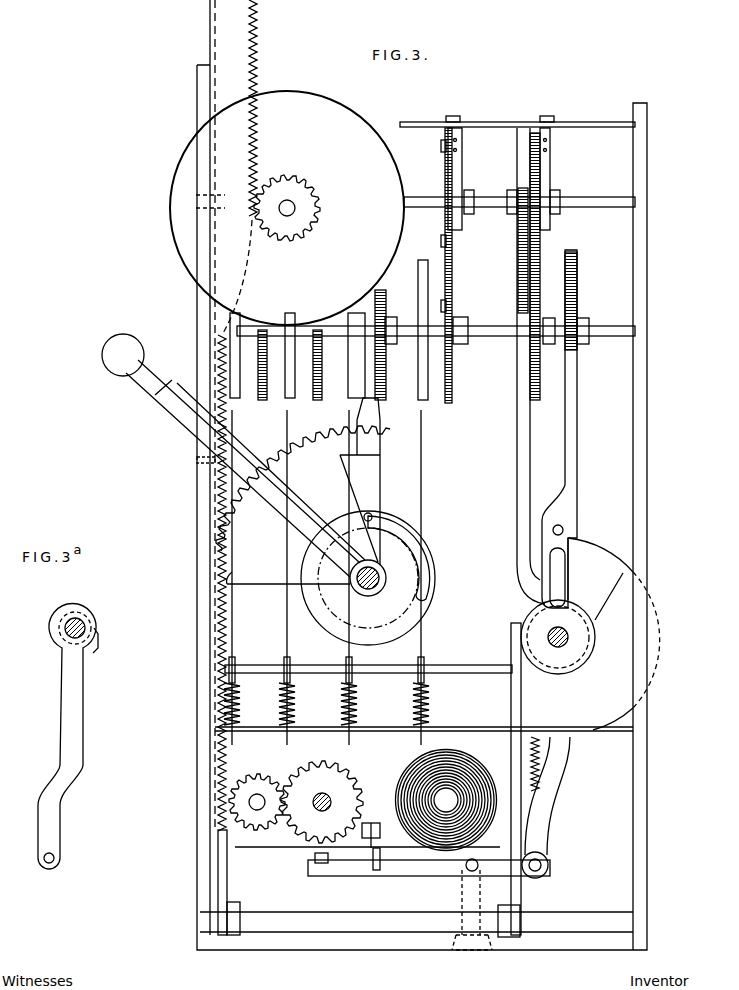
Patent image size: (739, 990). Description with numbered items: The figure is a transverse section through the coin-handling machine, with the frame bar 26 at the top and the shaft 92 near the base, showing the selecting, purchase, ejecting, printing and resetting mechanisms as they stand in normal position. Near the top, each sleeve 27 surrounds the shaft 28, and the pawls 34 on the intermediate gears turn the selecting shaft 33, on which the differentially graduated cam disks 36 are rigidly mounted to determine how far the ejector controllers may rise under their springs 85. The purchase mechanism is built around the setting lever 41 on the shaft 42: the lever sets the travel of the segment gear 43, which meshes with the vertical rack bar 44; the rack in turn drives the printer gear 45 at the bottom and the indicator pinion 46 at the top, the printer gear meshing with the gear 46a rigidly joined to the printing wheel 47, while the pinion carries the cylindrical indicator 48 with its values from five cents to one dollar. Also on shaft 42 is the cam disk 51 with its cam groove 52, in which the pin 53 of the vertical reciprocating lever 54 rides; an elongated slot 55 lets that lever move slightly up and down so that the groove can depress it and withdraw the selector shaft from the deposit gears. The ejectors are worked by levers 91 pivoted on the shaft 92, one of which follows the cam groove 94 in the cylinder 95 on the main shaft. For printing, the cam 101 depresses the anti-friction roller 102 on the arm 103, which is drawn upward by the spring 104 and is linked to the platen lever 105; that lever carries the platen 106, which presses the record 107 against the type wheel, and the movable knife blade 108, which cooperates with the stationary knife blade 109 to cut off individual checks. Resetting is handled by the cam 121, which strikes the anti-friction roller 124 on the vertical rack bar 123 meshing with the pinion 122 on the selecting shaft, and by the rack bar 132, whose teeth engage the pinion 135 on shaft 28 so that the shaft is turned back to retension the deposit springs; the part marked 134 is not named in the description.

In FIG. 3, the frame bar 26 is at (582, 125).
In FIG. 3, the sleeve 27 is at (557, 199).
In FIG. 3, the shaft 28 is at (594, 198).
In FIG. 3, the selecting shaft 33 is at (478, 326).
In FIG. 3, the pawl 34 is at (287, 432).
In FIG. 3, the cam disk 36 is at (237, 400).
In FIG. 3, the setting lever 41 is at (172, 422).
In FIG. 3A, the setting lever 41 is at (80, 622).
In FIG. 3, the shaft 42 is at (374, 596).
In FIG. 3, the segment gear 43 is at (378, 444).
In FIG. 3, the vertical rack bar 44 is at (222, 28).
In FIG. 3, the printer gear 45 is at (238, 800).
In FIG. 3, the indicator pinion 46 is at (313, 196).
In FIG. 3, the gear 46a is at (340, 786).
In FIG. 3, the printing wheel 47 is at (358, 798).
In FIG. 3, the cylindrical indicator 48 is at (323, 104).
In FIG. 3, the cam disk 51 is at (432, 580).
In FIG. 3, the cam groove 52 is at (386, 526).
In FIG. 3, the pin 53 is at (371, 513).
In FIG. 3, the vertical reciprocating lever 54 is at (382, 476).
In FIG. 3, the elongated slot 55 is at (385, 558).
In FIG. 3, the spring 85 is at (288, 706).
In FIG. 3, the lever 91 is at (511, 636).
In FIG. 3, the shaft 92 is at (555, 912).
In FIG. 3, the cam groove 94 is at (570, 640).
In FIG. 3, the cylinder 95 is at (560, 670).
In FIG. 3A, the cam 101 is at (98, 640).
In FIG. 3A, the anti-friction roller 102 is at (82, 655).
In FIG. 3, the arm 103 is at (564, 778).
In FIG. 3A, the arm 103 is at (84, 720).
In FIG. 3, the spring 104 is at (582, 748).
In FIG. 3, the platen lever 105 is at (421, 877).
In FIG. 3, the platen 106 is at (314, 858).
In FIG. 3, the record 107 is at (262, 849).
In FIG. 3, the movable knife blade 108 is at (382, 834).
In FIG. 3, the stationary knife blade 109 is at (377, 870).
In FIG. 3, the cam 121 is at (598, 556).
In FIG. 3, the pinion 122 is at (581, 344).
In FIG. 3, the vertical rack bar 123 is at (579, 280).
In FIG. 3, the anti-friction roller 124 is at (563, 528).
In FIG. 3, the rack bar 132 is at (517, 472).
In FIG. 3, the cam disc 134 is at (660, 663).
In FIG. 3, the pinion 135 is at (524, 190).